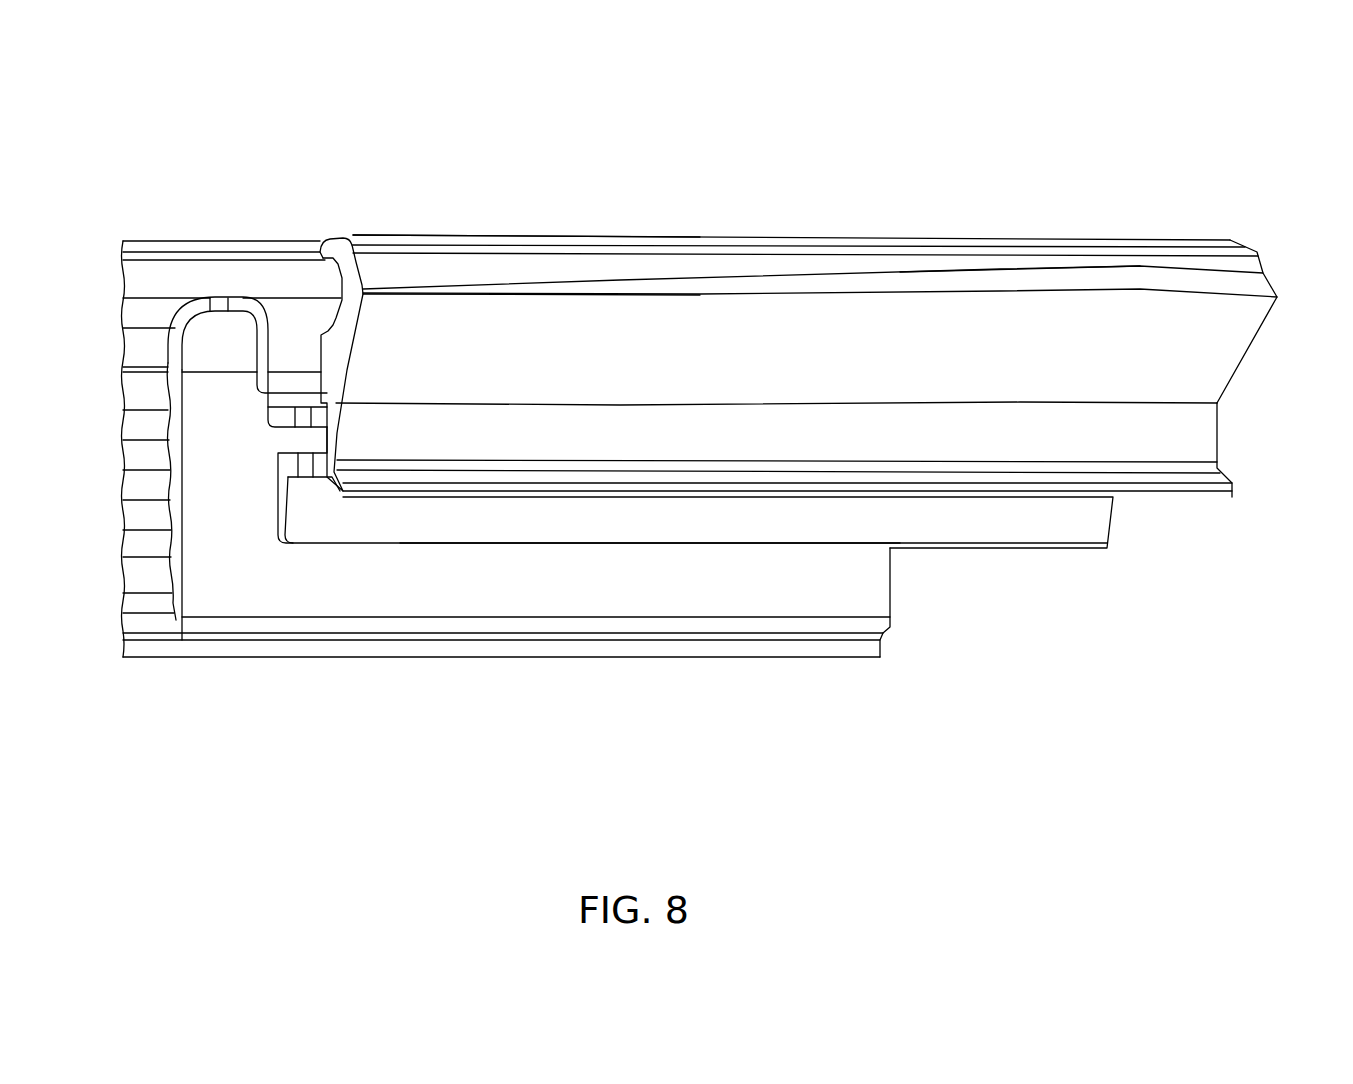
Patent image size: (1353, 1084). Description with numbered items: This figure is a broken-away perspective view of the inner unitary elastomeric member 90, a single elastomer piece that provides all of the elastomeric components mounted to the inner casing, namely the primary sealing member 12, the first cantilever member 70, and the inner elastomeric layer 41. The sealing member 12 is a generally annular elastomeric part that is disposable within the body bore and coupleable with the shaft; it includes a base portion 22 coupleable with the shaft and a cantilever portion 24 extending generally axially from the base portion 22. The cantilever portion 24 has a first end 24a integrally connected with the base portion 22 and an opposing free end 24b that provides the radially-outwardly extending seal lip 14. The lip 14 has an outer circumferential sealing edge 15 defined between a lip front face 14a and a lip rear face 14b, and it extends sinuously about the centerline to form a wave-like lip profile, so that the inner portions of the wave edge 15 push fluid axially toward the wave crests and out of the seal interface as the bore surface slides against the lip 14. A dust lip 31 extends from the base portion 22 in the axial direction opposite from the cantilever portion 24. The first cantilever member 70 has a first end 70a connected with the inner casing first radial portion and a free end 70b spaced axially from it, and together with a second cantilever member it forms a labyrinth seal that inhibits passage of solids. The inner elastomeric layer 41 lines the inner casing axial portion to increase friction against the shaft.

The inner unitary elastomeric member 90 is at (380, 172).
The sealing member 12 is at (680, 233).
The lip 14 is at (873, 277).
The lip front face 14a is at (973, 283).
The lip rear face 14b is at (995, 333).
The outer circumferential sealing edge 15 is at (703, 298).
The cantilever portion 24 is at (1253, 348).
The base portion 22 is at (1220, 438).
The cantilever portion free end 24b is at (337, 248).
The cantilever portion first end 24a is at (333, 383).
The inner elastomeric layer 41 is at (190, 465).
The first cantilever member first end 70a is at (283, 482).
The first cantilever member 70 is at (442, 547).
The first cantilever member free end 70b is at (520, 547).
The dust lip 31 is at (672, 490).